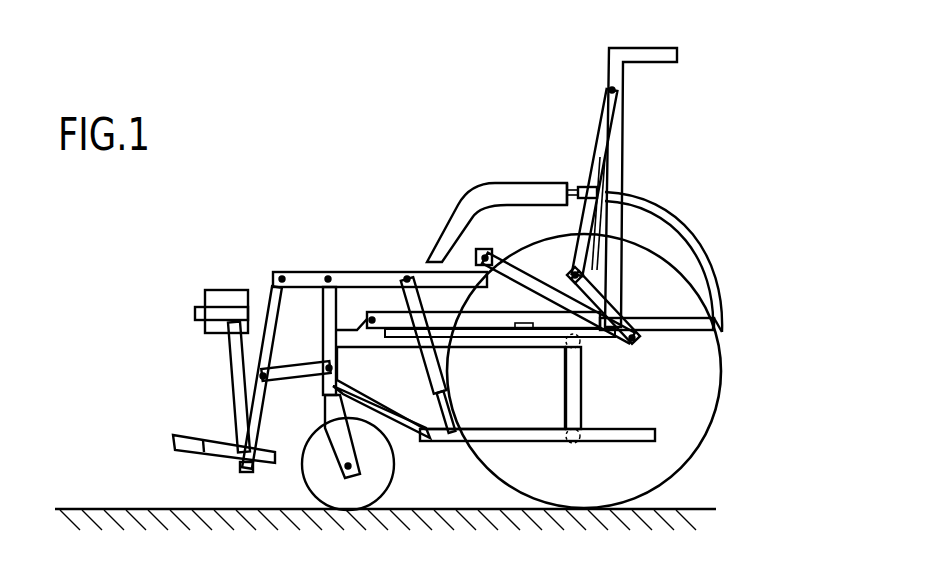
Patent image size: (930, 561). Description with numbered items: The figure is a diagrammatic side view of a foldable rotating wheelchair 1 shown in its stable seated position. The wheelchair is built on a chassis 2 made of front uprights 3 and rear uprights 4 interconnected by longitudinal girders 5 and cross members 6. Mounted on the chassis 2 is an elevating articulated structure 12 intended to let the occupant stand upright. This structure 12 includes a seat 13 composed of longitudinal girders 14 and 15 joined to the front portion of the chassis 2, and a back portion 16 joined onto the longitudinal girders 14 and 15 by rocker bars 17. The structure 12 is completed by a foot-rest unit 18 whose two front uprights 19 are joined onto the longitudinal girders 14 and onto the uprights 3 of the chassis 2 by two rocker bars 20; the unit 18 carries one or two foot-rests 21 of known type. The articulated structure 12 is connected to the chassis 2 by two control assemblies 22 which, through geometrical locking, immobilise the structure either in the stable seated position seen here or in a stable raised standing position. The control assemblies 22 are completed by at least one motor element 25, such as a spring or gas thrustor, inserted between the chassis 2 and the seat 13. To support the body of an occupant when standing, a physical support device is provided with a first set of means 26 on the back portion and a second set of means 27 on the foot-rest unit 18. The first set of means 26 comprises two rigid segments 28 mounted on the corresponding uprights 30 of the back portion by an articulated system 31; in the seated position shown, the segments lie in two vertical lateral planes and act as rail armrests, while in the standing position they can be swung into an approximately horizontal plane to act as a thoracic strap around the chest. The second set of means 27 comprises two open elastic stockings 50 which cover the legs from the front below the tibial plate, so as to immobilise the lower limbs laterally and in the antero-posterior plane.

The rotating wheelchair 1 is at (722, 380).
The chassis 2 is at (479, 422).
The front uprights 3 is at (449, 392).
The rear uprights 4 is at (570, 400).
The longitudinal girders 5 is at (495, 437).
The cross members 6 is at (572, 350).
The elevating articulated structure 12 is at (432, 269).
The seat 13 is at (383, 268).
The longitudinal girder 14 is at (316, 273).
The longitudinal girder 15 is at (457, 340).
The back portion 16 is at (607, 51).
The rocker bars 17 is at (615, 343).
The foot-rest unit 18 is at (265, 292).
The front uprights 19 is at (250, 468).
The rocker bars 20 is at (305, 377).
The foot-rests 21 is at (190, 447).
The control assemblies 22 is at (672, 212).
The motor element 25 is at (457, 403).
The first set of means 26 is at (487, 200).
The second set of means 27 is at (200, 288).
The rigid segments 28 is at (517, 181).
The uprights 30 is at (600, 117).
The articulated system 31 is at (592, 185).
The open elastic stockings 50 is at (228, 296).